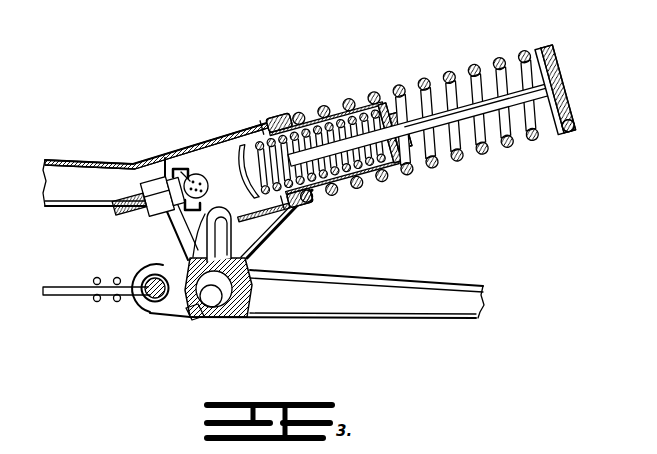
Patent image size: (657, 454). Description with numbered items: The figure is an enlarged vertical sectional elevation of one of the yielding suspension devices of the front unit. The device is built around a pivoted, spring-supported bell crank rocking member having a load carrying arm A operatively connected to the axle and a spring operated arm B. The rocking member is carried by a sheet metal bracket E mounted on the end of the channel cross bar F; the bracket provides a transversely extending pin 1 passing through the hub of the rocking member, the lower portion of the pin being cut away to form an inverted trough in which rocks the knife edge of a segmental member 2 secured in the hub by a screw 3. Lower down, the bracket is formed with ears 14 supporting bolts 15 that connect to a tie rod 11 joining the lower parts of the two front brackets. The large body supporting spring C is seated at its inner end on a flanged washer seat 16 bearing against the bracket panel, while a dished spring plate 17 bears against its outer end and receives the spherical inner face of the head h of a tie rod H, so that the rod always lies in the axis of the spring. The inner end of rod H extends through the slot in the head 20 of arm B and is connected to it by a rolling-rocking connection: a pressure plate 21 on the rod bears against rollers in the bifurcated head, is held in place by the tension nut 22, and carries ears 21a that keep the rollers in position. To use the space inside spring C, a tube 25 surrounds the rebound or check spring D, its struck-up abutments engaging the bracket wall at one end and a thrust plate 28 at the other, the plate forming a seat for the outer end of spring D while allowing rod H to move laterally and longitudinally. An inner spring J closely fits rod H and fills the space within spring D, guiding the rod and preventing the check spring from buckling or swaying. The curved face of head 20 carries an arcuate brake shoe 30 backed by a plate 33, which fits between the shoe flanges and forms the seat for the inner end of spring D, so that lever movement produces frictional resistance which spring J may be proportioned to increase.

The pin 1 is at (216, 322).
The segmental member 2 is at (210, 316).
The screw 3 is at (192, 319).
The tie rod 11 is at (78, 293).
The ears 14 is at (153, 313).
The bolts 15 is at (140, 304).
The seat 16 is at (276, 113).
The dished spring plate 17 is at (255, 128).
The head 20 is at (210, 186).
The pressure plate 21 is at (182, 167).
The ears 21a is at (203, 172).
The tension nut 22 is at (157, 208).
The tube 25 is at (363, 107).
The thrust plate 28 is at (406, 152).
The brake shoe 30 is at (238, 152).
The backing plate 33 is at (228, 232).
The load carrying arm A is at (405, 292).
The spring operated arm B is at (227, 243).
The supporting spring C is at (401, 177).
The rebound spring D is at (353, 191).
The bracket E is at (182, 222).
The cross bar F is at (148, 162).
The tie rod H is at (117, 206).
The inner spring J is at (315, 193).
The head h is at (561, 91).